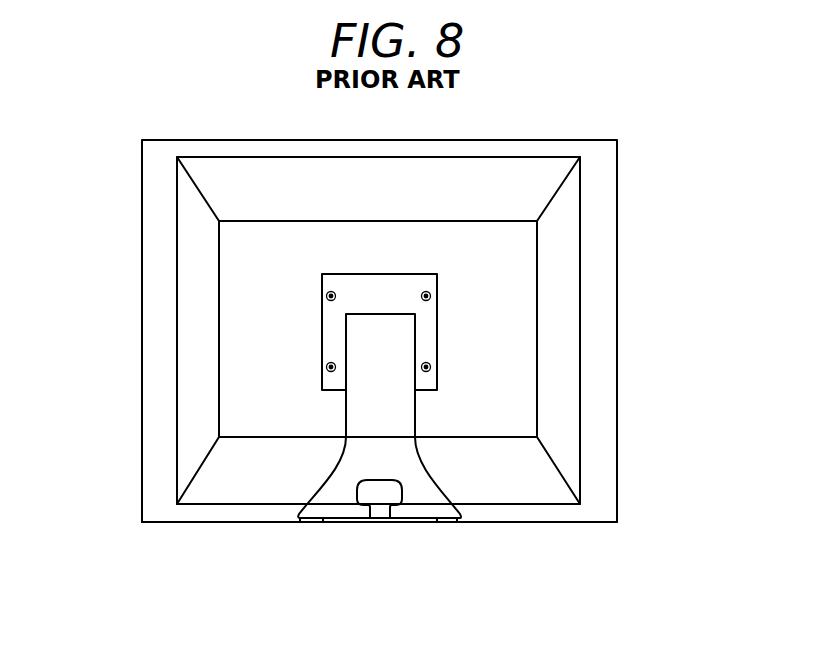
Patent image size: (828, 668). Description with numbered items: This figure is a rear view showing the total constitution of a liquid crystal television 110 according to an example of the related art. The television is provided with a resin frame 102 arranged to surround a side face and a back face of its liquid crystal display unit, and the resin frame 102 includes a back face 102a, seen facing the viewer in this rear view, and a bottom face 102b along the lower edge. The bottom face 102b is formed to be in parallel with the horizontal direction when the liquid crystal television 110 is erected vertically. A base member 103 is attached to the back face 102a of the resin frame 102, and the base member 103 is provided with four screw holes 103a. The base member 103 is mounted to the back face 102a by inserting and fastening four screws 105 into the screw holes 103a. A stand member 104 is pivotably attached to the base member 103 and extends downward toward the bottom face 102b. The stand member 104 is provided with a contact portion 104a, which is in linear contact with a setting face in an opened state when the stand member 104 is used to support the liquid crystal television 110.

The liquid crystal television 110 is at (586, 128).
The resin frame 102 is at (608, 222).
The back face 102a is at (533, 186).
The bottom face 102b is at (545, 523).
The base member 103 is at (375, 285).
The screw holes 103a is at (327, 299).
The stand member 104 is at (357, 417).
The contact portion 104a is at (315, 523).
The screws 105 is at (328, 295).